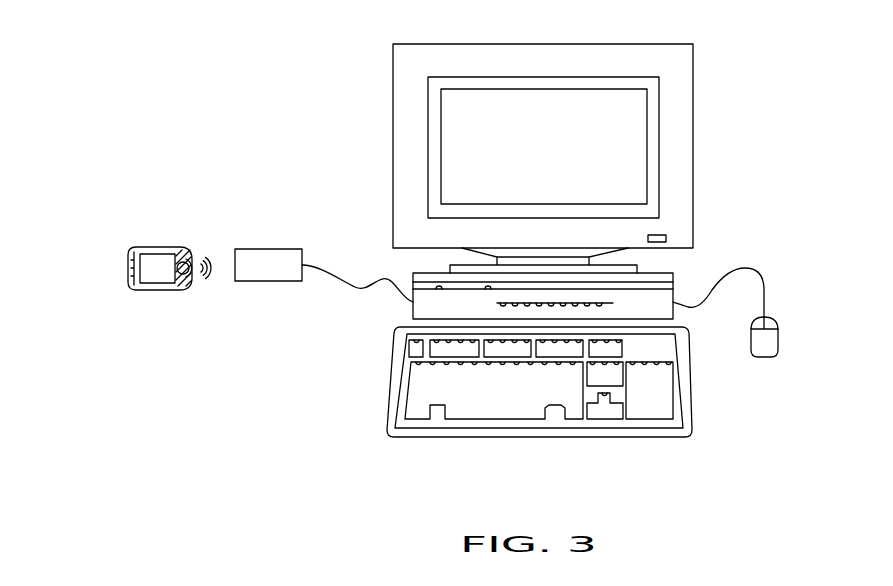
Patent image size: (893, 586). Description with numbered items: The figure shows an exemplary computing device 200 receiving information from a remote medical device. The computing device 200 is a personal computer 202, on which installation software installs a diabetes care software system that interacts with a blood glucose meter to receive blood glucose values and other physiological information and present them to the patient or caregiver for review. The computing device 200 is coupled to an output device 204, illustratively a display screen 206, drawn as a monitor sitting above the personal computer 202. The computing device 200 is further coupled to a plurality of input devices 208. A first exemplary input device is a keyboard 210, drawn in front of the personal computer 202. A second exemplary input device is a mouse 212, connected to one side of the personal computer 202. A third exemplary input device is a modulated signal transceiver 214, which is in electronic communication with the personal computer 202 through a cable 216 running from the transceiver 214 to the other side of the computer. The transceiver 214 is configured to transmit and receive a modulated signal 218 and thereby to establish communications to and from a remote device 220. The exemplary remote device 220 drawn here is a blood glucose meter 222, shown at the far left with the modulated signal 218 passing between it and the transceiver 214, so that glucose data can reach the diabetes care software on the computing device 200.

The computing device 200 is at (361, 105).
The personal computer 202 is at (675, 279).
The output device 204 is at (677, 85).
The display screen 206 is at (634, 164).
The input devices 208 is at (398, 462).
The keyboard 210 is at (686, 393).
The mouse 212 is at (773, 340).
The modulated signal transceiver 214 is at (292, 249).
The cable 216 is at (355, 287).
The modulated signal 218 is at (210, 255).
The remote device 220 is at (114, 265).
The blood glucose meter 222 is at (160, 247).